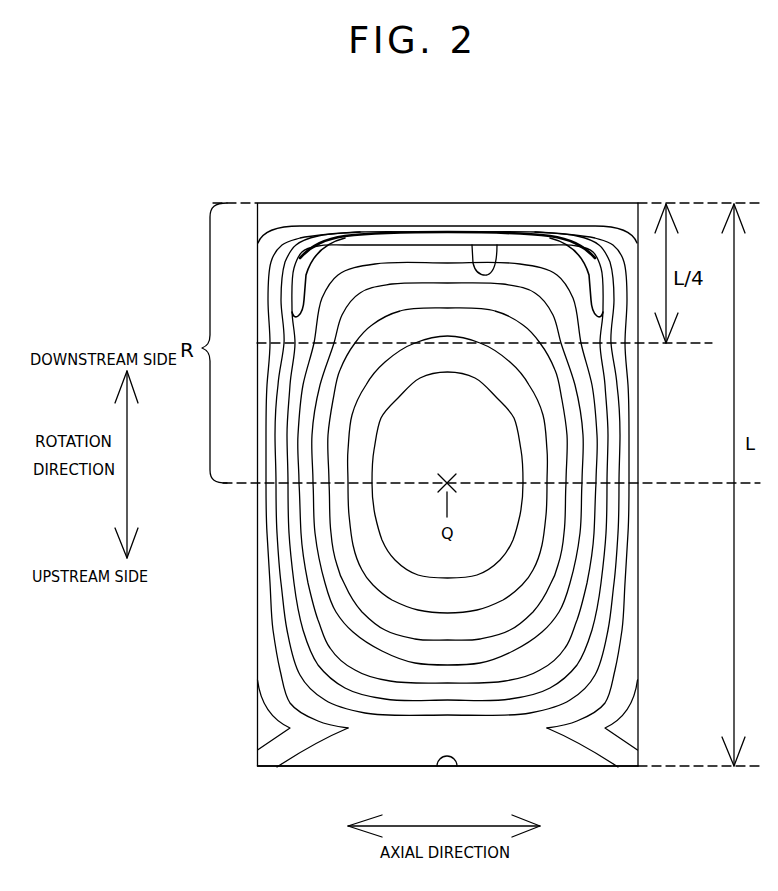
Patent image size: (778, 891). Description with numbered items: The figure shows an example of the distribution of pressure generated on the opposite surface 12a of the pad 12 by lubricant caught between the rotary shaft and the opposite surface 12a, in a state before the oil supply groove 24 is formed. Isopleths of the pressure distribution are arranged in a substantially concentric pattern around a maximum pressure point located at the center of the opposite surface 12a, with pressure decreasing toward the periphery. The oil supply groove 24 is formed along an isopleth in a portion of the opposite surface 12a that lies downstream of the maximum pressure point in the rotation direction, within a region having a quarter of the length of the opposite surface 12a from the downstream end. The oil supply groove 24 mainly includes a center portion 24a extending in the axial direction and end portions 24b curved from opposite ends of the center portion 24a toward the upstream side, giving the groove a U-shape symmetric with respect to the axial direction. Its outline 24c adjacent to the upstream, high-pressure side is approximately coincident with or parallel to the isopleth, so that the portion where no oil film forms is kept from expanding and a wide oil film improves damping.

The pad 12 is at (135, 222).
The opposite surface 12a is at (307, 760).
The oil supply groove 24 is at (376, 231).
The center portion 24a is at (445, 238).
The end portions 24b is at (318, 263).
The outline 24c is at (502, 270).